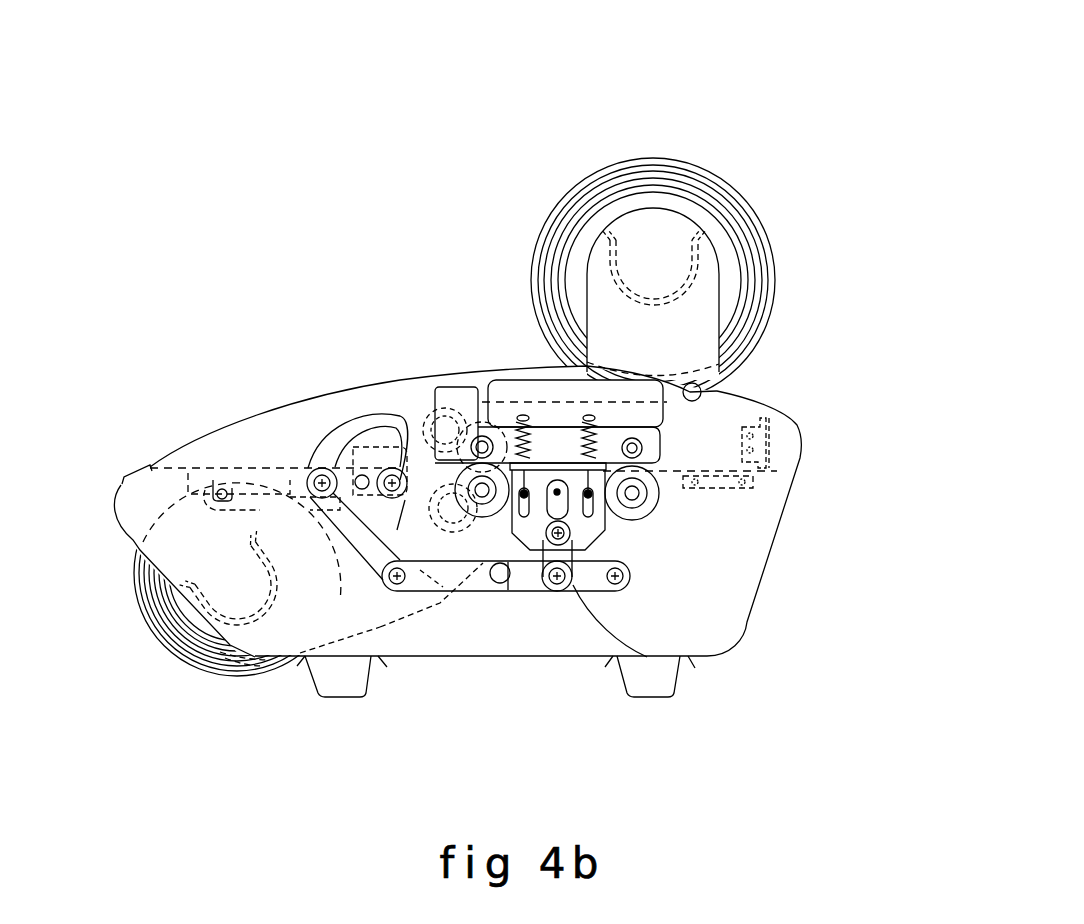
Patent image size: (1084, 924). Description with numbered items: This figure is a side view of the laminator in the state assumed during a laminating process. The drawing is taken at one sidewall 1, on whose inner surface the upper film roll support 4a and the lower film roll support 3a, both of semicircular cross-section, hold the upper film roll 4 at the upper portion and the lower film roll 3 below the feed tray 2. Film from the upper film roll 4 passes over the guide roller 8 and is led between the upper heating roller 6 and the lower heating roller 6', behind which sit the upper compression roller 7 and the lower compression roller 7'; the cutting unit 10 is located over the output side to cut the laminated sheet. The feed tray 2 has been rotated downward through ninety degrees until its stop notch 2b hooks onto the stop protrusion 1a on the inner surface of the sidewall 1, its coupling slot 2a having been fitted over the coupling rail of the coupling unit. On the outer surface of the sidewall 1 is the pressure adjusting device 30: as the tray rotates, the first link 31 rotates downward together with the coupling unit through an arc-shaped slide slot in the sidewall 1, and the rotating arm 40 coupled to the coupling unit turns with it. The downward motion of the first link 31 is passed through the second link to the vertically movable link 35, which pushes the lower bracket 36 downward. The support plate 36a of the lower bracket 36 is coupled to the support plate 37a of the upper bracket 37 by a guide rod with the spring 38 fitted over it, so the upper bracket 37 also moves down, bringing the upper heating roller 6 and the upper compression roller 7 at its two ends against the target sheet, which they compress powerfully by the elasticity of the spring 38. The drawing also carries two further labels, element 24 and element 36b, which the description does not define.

The sidewall 1 is at (570, 590).
The stop protrusion 1a is at (223, 487).
The feed tray 2 is at (128, 468).
The coupling slot 2a is at (306, 492).
The stop notch 2b is at (226, 492).
The lower film roll 3 is at (175, 615).
The lower film roll support 3a is at (227, 617).
The upper film roll 4 is at (668, 176).
The upper film roll support 4a is at (698, 266).
The upper heating roller 6 is at (460, 362).
The lower heating roller 6' is at (489, 618).
The upper compression roller 7 is at (742, 425).
The lower compression roller 7' is at (725, 516).
The guide roller 8 is at (701, 392).
The cutting unit 10 is at (780, 438).
The guide 24 is at (515, 577).
The pressure adjusting device 30 is at (440, 604).
The first link 31 is at (370, 552).
The vertically movable link 35 is at (670, 660).
The lower bracket 36 is at (575, 580).
The support plate of the lower bracket 36a is at (658, 497).
The slide plate screw 36b is at (572, 540).
The upper bracket 37 is at (450, 395).
The support plate of the upper bracket 37a is at (555, 457).
The spring 38 is at (490, 437).
The rotating arm 40 is at (592, 417).